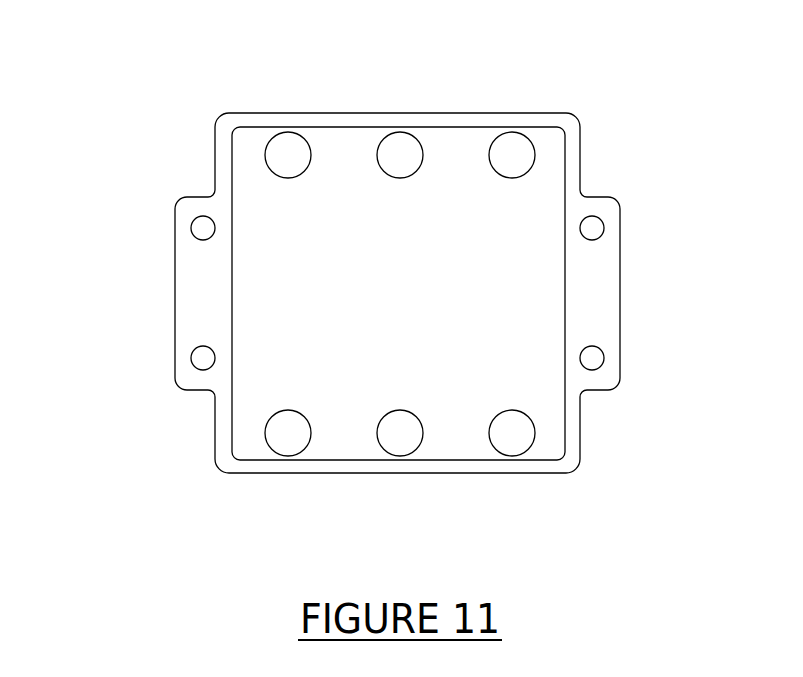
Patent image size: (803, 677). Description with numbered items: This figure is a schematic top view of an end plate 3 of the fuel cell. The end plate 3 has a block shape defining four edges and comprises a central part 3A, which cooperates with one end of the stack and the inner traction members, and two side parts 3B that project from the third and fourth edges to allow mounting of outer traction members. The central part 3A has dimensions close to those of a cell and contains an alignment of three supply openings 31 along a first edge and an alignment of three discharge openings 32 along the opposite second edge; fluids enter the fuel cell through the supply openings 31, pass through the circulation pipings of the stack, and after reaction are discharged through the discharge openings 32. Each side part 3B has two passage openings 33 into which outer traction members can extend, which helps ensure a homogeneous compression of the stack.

The end plate 3 is at (152, 79).
The central part 3A is at (482, 266).
The side part 3B is at (174, 300).
The supply opening 31 is at (284, 133).
The discharge opening 32 is at (293, 455).
The passage opening 33 is at (191, 228).